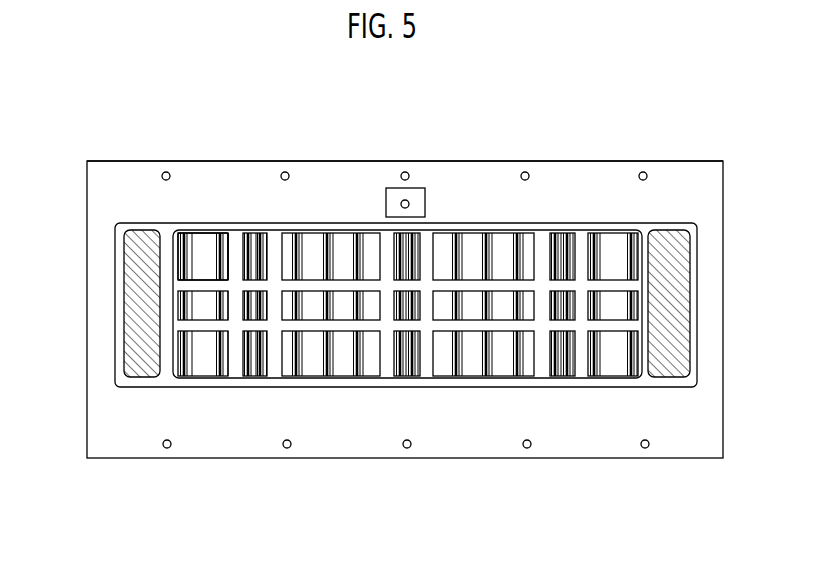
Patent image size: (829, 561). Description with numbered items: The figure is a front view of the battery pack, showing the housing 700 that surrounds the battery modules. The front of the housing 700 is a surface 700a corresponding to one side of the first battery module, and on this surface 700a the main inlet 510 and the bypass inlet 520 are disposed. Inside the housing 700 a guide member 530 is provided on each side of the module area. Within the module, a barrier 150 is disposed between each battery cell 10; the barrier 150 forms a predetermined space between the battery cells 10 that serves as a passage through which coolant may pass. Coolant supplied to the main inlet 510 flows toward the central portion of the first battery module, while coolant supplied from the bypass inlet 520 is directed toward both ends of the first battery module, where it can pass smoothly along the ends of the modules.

The battery cell 10 is at (204, 250).
The barrier 150 is at (225, 267).
The main inlet 510 is at (345, 373).
The bypass inlet 520 is at (133, 378).
The guide member 530 is at (138, 300).
The housing 700 is at (668, 378).
The surface 700a is at (437, 160).